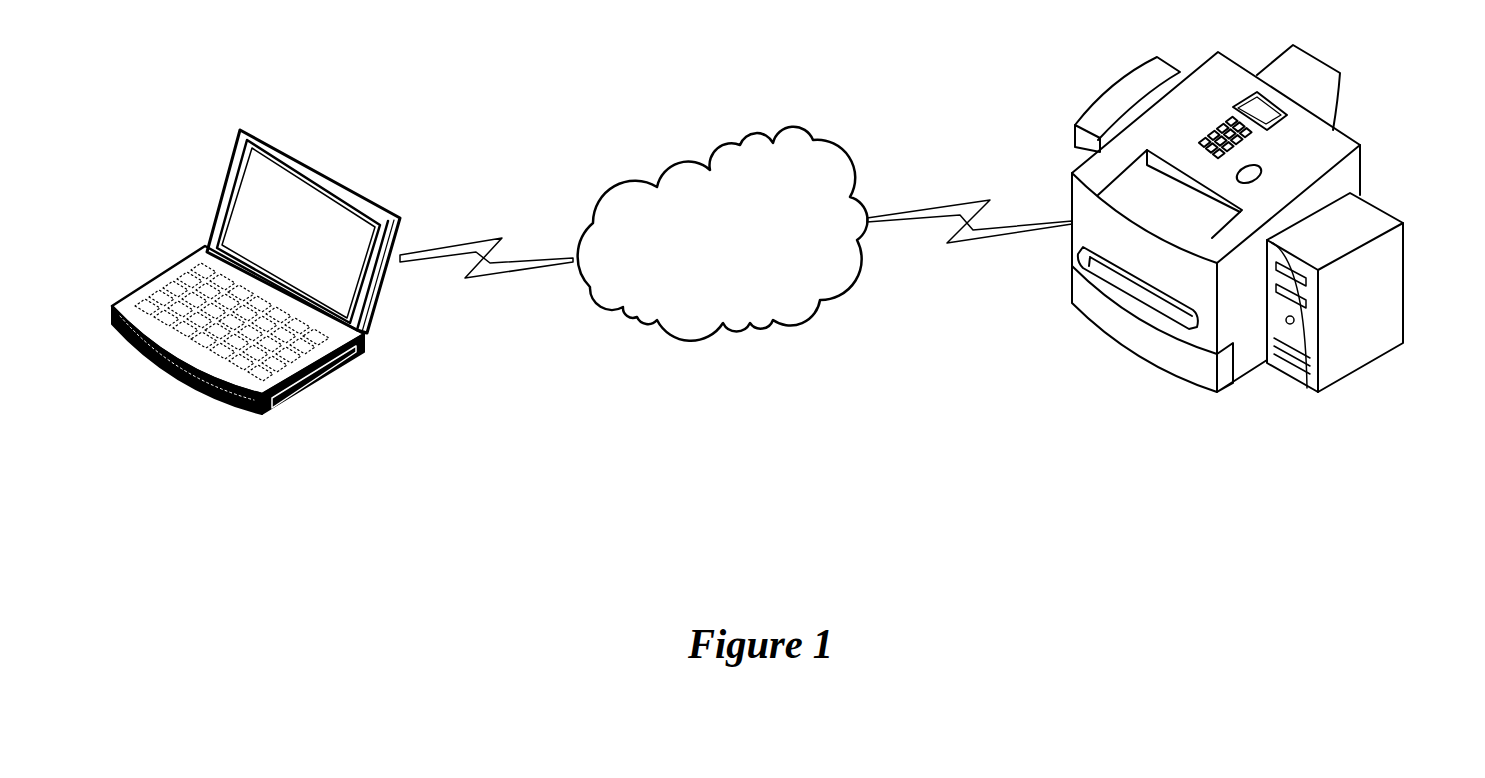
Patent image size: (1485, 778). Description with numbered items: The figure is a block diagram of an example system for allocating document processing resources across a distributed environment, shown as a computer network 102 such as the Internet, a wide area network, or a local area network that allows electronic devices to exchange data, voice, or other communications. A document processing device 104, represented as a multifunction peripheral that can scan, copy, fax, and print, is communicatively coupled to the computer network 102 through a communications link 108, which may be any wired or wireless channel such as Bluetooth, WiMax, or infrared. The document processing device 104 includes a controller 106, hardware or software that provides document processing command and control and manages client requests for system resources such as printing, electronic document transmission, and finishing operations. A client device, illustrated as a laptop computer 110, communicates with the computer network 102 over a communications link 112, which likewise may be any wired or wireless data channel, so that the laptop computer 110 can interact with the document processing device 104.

The computer network 102 is at (797, 121).
The document processing device 104 is at (1350, 131).
The controller 106 is at (1403, 218).
The communications link 108 is at (957, 200).
The laptop computer 110 is at (252, 129).
The communications link 112 is at (490, 238).